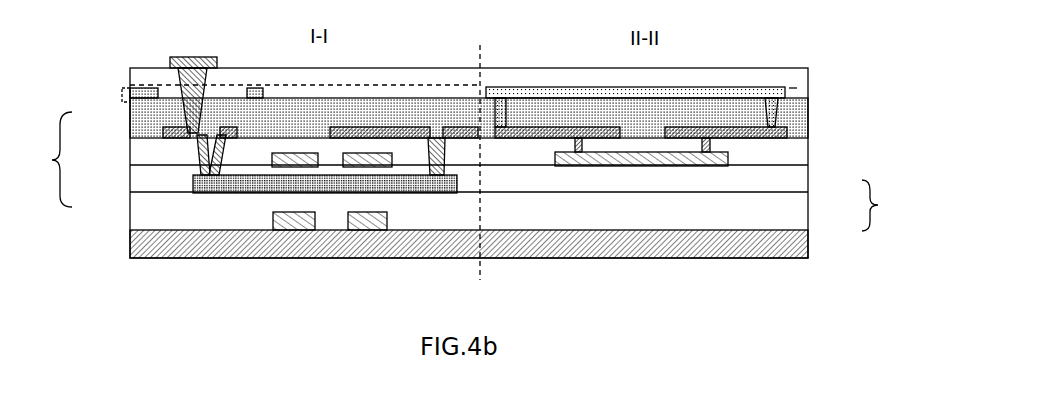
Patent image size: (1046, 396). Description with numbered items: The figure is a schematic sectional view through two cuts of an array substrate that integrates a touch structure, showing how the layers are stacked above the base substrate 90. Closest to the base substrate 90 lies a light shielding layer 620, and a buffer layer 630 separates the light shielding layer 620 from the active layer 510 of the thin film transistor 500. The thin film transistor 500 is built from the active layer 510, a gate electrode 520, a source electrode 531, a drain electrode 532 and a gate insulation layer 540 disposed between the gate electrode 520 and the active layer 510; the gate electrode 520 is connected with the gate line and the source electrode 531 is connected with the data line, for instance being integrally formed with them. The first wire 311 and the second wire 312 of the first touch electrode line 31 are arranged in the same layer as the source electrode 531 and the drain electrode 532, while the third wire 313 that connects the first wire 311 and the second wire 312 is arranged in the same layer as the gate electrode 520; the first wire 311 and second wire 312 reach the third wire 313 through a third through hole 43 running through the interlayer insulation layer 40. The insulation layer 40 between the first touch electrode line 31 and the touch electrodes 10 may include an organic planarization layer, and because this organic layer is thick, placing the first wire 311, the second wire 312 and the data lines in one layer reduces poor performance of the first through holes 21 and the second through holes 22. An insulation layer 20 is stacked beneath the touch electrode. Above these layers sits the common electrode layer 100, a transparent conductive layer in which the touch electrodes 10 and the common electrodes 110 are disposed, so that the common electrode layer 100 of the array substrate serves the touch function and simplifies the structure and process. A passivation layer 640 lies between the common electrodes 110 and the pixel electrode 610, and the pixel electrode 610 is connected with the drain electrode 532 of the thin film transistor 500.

The pixel electrode 610 is at (175, 58).
The passivation layer 640 is at (162, 77).
The common electrodes 110 is at (136, 84).
The source electrode 531 is at (333, 130).
The drain electrode 532 is at (163, 131).
The gate electrode 520 is at (272, 155).
The gate insulation layer 540 is at (143, 177).
The active layer 510 is at (200, 193).
The buffer layer 630 is at (193, 215).
The light shielding layer 620 is at (285, 225).
The thin film transistor 500 is at (247, 160).
The first through holes 21 is at (510, 117).
The second through holes 22 is at (763, 110).
The third through hole 43 is at (578, 142).
The common electrode layer 100 is at (803, 80).
The touch electrodes 10 is at (781, 95).
The insulation layer 20 is at (787, 115).
The interlayer insulation layer 40 is at (787, 153).
The first wire 311 is at (590, 138).
The second wire 312 is at (677, 138).
The third wire 313 is at (723, 160).
The first touch electrode line 31 is at (701, 182).
The base substrate 90 is at (783, 243).